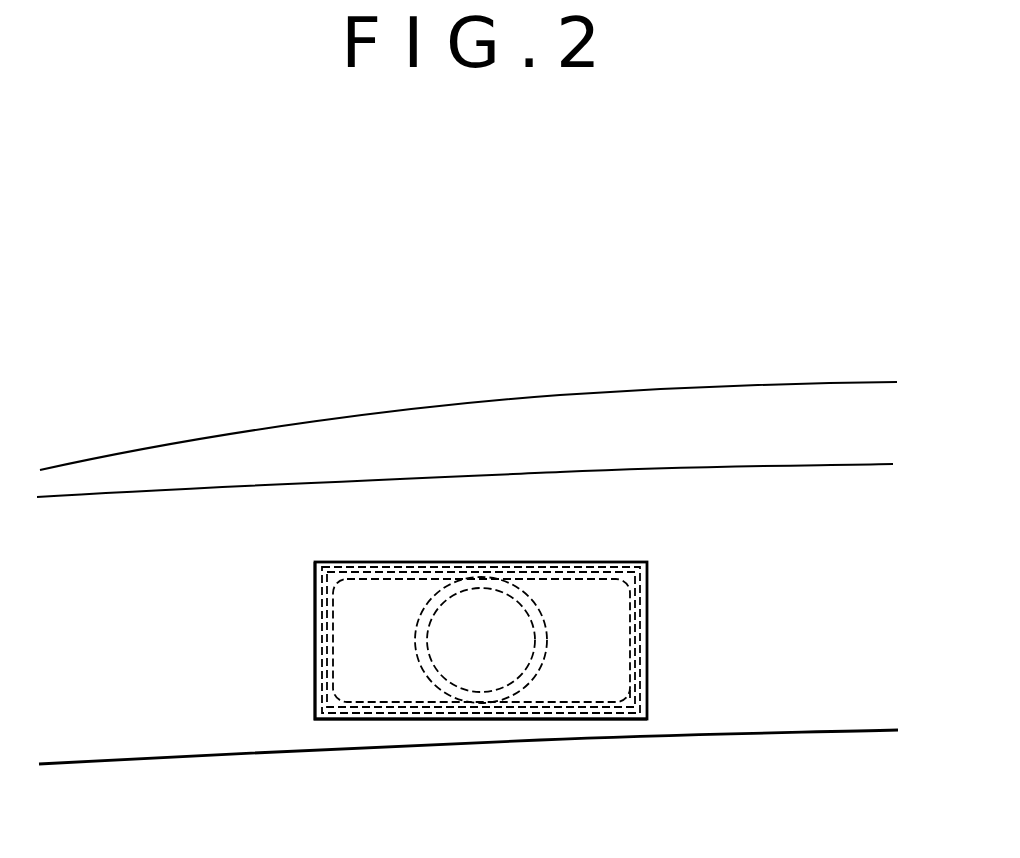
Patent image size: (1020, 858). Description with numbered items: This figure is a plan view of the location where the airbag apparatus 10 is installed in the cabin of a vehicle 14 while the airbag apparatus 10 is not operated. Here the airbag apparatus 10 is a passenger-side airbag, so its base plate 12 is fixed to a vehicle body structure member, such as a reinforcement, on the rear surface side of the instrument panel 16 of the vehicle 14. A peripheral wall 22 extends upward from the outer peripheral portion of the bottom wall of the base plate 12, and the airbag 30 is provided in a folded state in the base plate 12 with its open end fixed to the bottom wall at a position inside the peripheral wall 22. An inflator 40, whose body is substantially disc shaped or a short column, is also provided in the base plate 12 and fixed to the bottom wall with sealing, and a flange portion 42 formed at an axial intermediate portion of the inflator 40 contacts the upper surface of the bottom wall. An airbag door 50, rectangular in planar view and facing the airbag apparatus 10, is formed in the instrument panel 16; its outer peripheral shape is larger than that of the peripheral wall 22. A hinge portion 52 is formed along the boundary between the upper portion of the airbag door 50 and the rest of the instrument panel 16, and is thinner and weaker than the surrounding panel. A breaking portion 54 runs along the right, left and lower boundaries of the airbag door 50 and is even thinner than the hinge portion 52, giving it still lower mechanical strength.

The airbag apparatus 10 is at (601, 615).
The base plate 12 is at (360, 563).
The vehicle 14 is at (563, 377).
The instrument panel 16 is at (178, 730).
The peripheral wall 22 is at (314, 626).
The airbag 30 is at (565, 591).
The inflator 40 is at (471, 600).
The flange portion 42 is at (418, 618).
The airbag door 50 is at (578, 688).
The hinge portion 52 is at (412, 562).
The breaking portion 54 is at (314, 689).